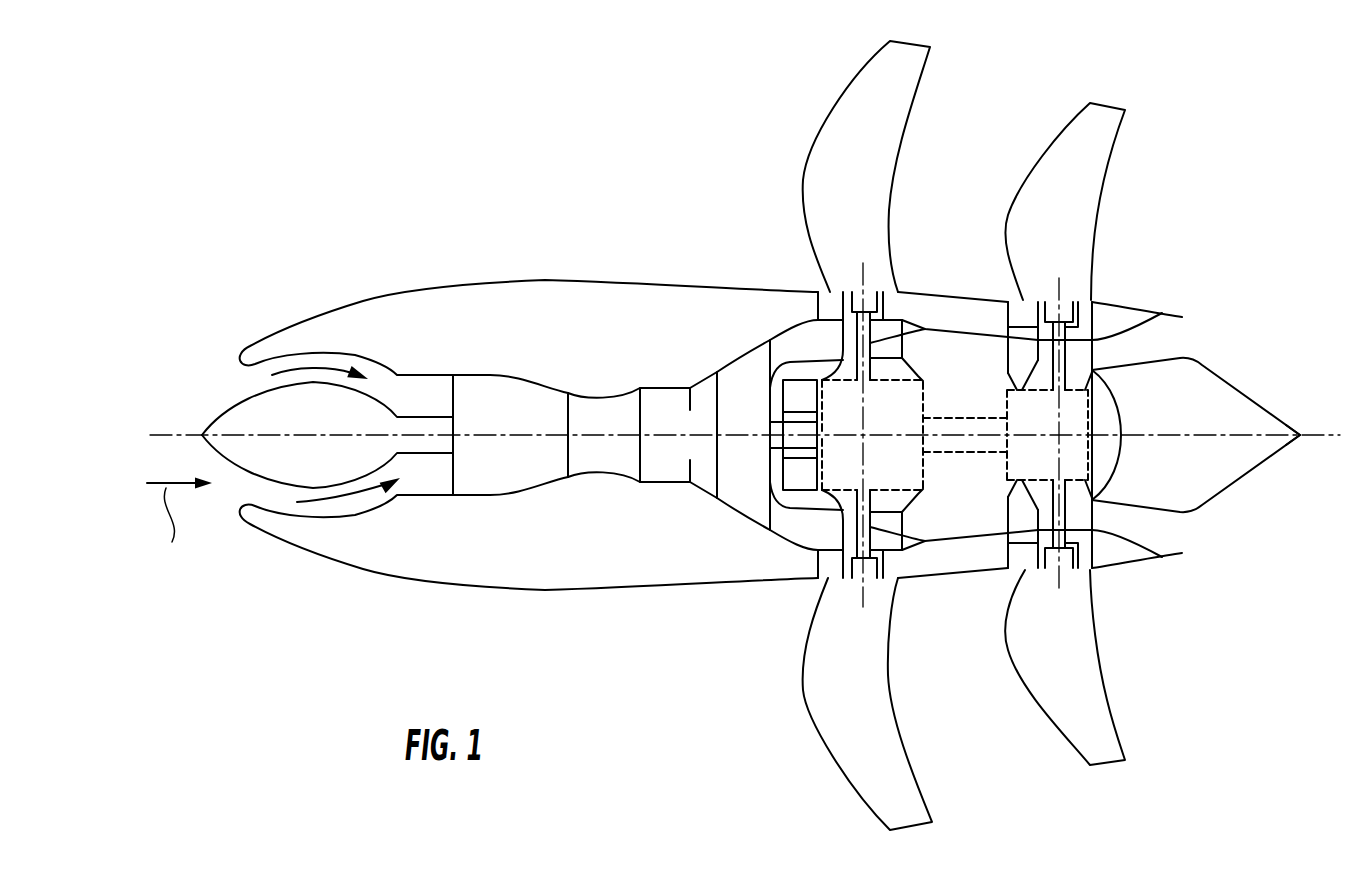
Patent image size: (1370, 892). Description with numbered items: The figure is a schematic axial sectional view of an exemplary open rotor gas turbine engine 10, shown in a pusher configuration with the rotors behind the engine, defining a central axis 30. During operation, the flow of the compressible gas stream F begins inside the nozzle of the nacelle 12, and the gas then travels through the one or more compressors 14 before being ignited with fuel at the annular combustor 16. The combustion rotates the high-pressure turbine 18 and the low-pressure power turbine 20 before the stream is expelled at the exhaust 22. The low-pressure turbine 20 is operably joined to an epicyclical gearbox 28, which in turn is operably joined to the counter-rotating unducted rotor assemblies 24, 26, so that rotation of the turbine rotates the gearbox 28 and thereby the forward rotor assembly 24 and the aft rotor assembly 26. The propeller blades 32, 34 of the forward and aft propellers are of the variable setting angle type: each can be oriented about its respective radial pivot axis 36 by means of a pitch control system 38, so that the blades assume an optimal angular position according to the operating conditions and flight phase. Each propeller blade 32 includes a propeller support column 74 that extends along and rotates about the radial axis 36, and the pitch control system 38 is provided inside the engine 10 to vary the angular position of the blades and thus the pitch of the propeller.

The open rotor gas turbine engine 10 is at (312, 228).
The nacelle 12 is at (284, 304).
The compressors 14 is at (505, 451).
The combustor 16 is at (592, 451).
The high-pressure turbine 18 is at (676, 451).
The low-pressure power turbine 20 is at (733, 451).
The exhaust 22 is at (1254, 360).
The forward rotor assembly 24 is at (806, 751).
The aft rotor assembly 26 is at (1132, 727).
The epicyclical gearbox 28 is at (762, 364).
The central axis 30 is at (1303, 437).
The propeller blades 32 is at (827, 155).
The propeller blades 34 is at (1083, 160).
The radial pivot axis 36 is at (862, 272).
The pitch control system 38 is at (856, 451).
The propeller support column 74 is at (878, 346).